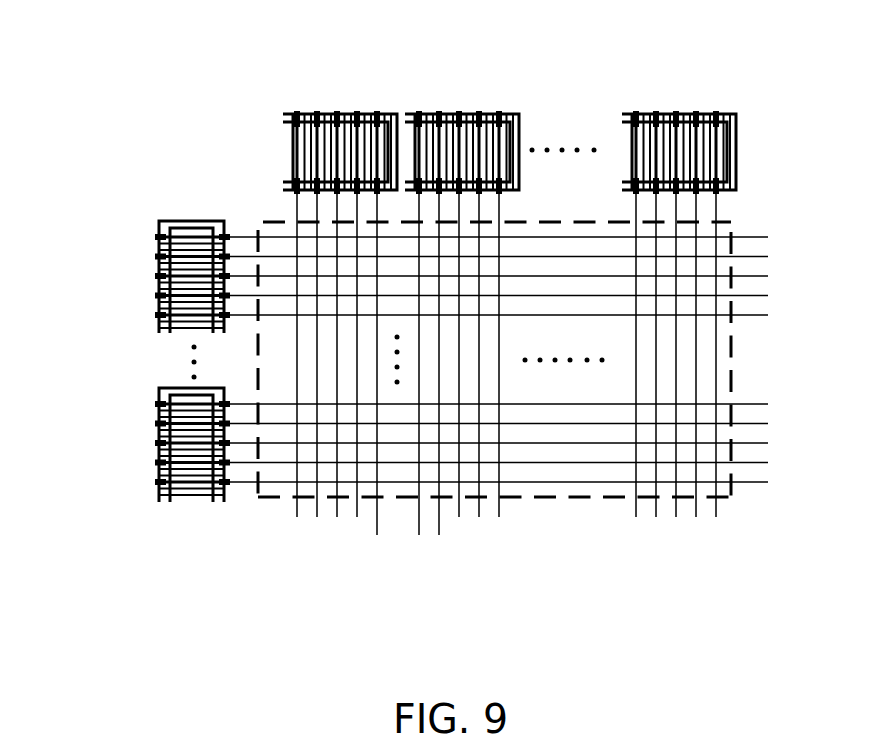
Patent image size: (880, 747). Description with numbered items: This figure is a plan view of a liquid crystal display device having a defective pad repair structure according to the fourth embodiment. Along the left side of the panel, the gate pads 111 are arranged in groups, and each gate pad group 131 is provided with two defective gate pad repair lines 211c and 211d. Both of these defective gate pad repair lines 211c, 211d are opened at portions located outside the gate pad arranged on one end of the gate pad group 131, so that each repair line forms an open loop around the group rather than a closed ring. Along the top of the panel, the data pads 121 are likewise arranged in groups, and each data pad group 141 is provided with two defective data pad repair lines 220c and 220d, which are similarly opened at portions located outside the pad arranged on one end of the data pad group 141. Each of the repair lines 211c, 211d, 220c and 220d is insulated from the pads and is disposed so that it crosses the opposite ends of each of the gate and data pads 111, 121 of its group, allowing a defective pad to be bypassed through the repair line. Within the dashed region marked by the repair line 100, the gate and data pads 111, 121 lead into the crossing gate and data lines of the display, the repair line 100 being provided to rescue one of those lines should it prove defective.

The repair line 100 is at (734, 227).
The gate pads 111 is at (163, 235).
The data pads 121 is at (318, 103).
The gate pad group 131 is at (136, 426).
The data pad group 141 is at (513, 100).
The defective gate pad repair line 211c is at (170, 220).
The defective gate pad repair line 211d is at (214, 219).
The defective data pad repair line 220c is at (306, 115).
The defective data pad repair line 220d is at (387, 115).